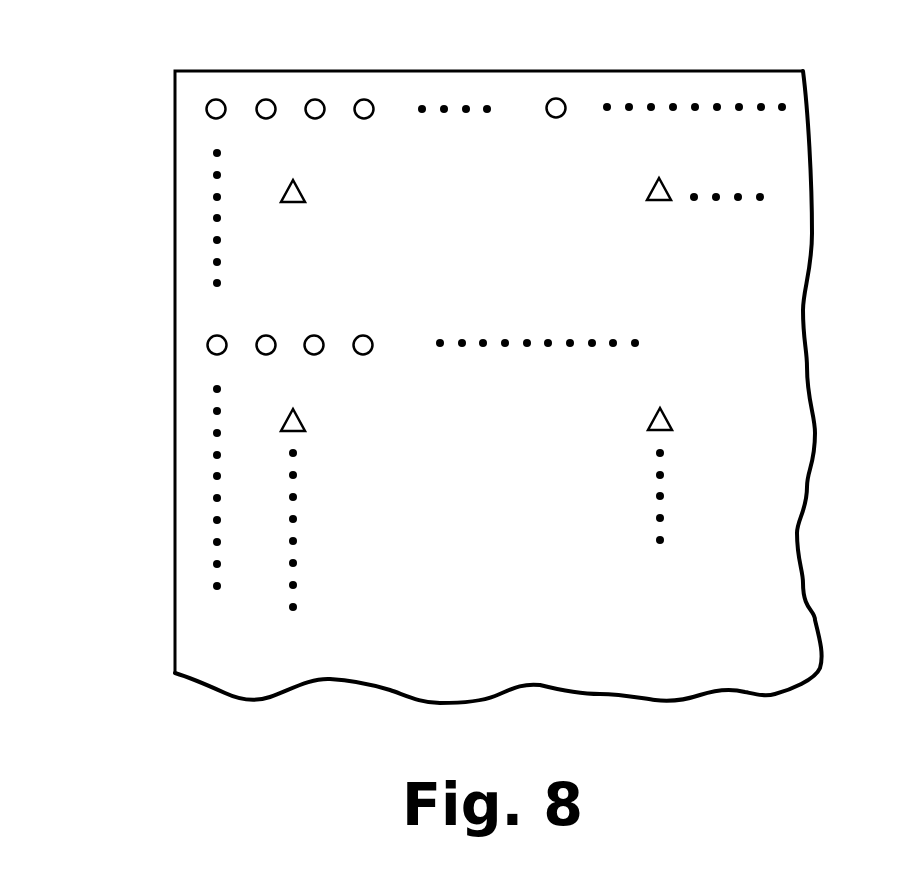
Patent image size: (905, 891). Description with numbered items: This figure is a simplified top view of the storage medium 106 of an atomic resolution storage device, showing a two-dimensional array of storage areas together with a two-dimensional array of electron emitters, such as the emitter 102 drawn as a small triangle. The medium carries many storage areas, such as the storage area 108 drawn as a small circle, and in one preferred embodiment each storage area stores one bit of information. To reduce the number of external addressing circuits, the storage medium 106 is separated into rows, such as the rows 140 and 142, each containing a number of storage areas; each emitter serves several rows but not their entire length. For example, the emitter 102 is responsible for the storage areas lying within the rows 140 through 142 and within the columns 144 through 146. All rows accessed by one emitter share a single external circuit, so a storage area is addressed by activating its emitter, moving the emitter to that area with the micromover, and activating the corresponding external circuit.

The electron emitter 102 is at (303, 189).
The storage medium 106 is at (708, 71).
The storage area 108 is at (232, 60).
The row 140 is at (414, 85).
The row 142 is at (197, 343).
The column 144 is at (209, 104).
The column 146 is at (557, 98).